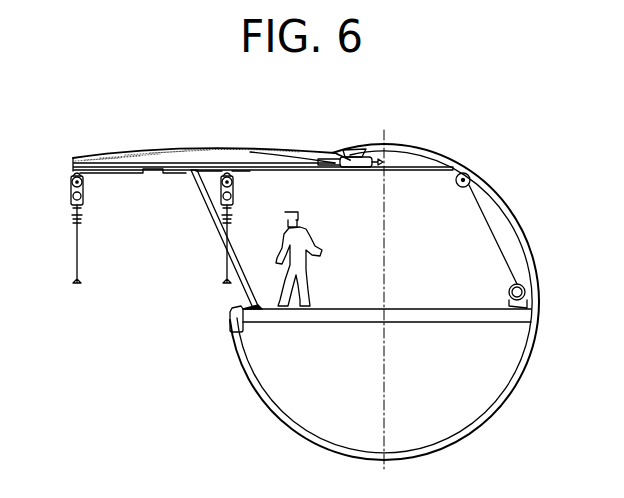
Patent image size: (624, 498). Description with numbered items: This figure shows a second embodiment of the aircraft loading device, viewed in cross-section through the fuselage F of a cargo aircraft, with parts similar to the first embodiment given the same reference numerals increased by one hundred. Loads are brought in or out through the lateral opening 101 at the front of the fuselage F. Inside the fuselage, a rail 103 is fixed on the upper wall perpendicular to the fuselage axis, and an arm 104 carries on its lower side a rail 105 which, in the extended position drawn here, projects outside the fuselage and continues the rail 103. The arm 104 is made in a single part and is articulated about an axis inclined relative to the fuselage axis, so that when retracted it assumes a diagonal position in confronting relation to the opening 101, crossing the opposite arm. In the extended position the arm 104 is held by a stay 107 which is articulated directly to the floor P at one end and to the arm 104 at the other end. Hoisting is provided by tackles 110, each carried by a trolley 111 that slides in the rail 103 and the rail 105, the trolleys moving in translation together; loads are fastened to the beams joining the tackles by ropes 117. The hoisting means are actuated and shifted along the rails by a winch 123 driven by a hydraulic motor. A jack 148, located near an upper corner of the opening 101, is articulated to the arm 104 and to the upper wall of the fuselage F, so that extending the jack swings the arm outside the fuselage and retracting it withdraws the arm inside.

The fuselage F is at (523, 225).
The floor P is at (423, 309).
The lateral opening 101 is at (239, 306).
The rail 103 is at (417, 172).
The arm 104 is at (180, 155).
The rail 105 is at (303, 170).
The stay 107 is at (219, 224).
The tackle 110 is at (83, 184).
The trolley 111 is at (134, 173).
The rope 117 is at (77, 253).
The winch 123 is at (508, 291).
The jack 148 is at (352, 159).